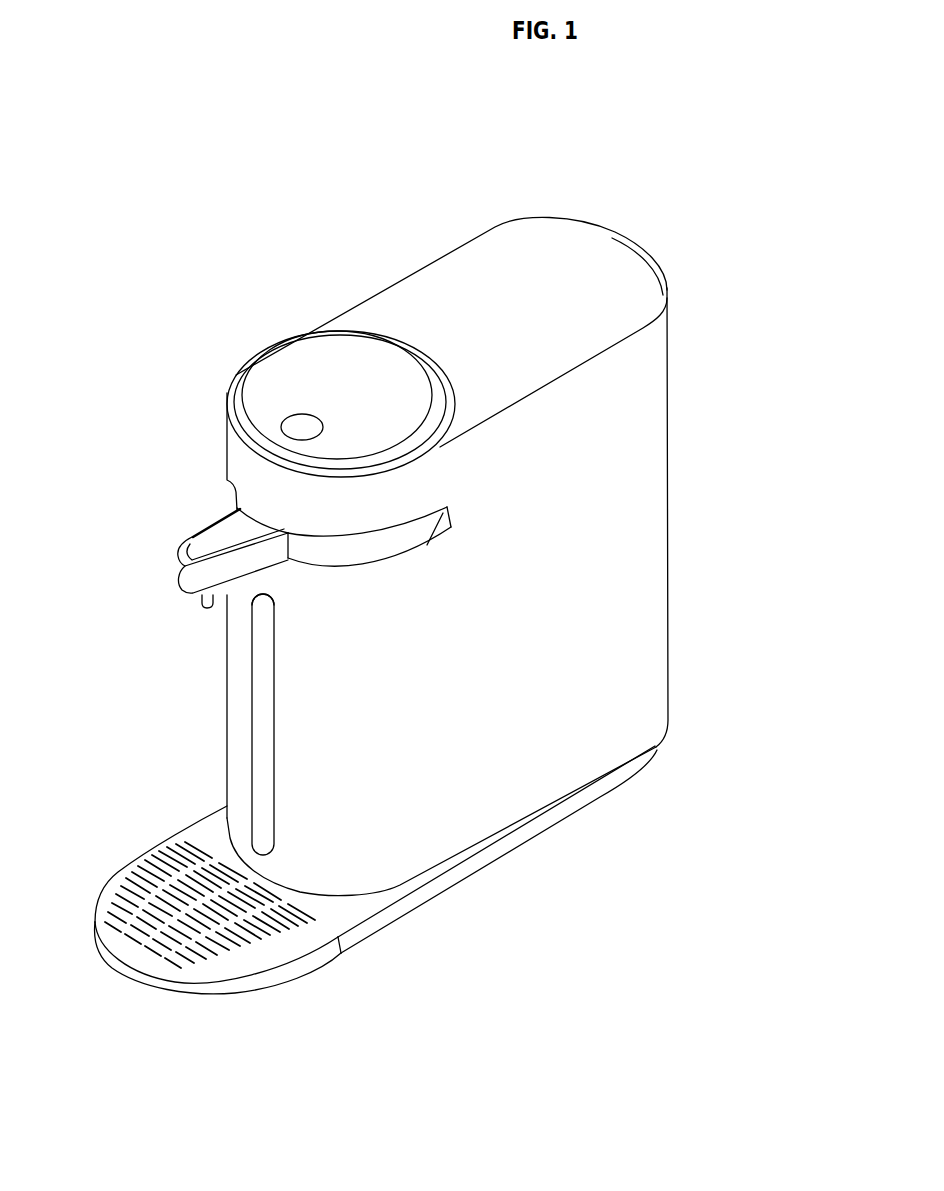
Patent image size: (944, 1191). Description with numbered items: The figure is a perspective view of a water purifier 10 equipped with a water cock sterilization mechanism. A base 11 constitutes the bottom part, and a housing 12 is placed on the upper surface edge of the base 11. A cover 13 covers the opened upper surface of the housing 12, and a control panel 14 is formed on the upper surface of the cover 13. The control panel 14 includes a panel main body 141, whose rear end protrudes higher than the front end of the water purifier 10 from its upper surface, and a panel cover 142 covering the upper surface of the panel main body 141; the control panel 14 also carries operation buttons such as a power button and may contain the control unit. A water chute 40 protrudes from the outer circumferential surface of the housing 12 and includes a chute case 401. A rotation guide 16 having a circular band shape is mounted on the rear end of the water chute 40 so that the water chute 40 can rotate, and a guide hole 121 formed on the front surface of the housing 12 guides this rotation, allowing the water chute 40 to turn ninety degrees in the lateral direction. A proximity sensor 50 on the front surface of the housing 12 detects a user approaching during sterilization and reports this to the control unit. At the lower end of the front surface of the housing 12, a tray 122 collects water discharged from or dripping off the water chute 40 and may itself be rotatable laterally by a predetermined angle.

The water purifier 10 is at (556, 189).
The base 11 is at (567, 805).
The housing 12 is at (608, 612).
The cover 13 is at (598, 254).
The control panel 14 is at (395, 231).
The panel main body 141 is at (436, 383).
The panel cover 142 is at (325, 353).
The rotation guide 16 is at (380, 548).
The water chute 40 is at (196, 539).
The chute case 401 is at (180, 574).
The proximity sensor 50 is at (266, 606).
The guide hole 121 is at (343, 568).
The tray 122 is at (132, 952).